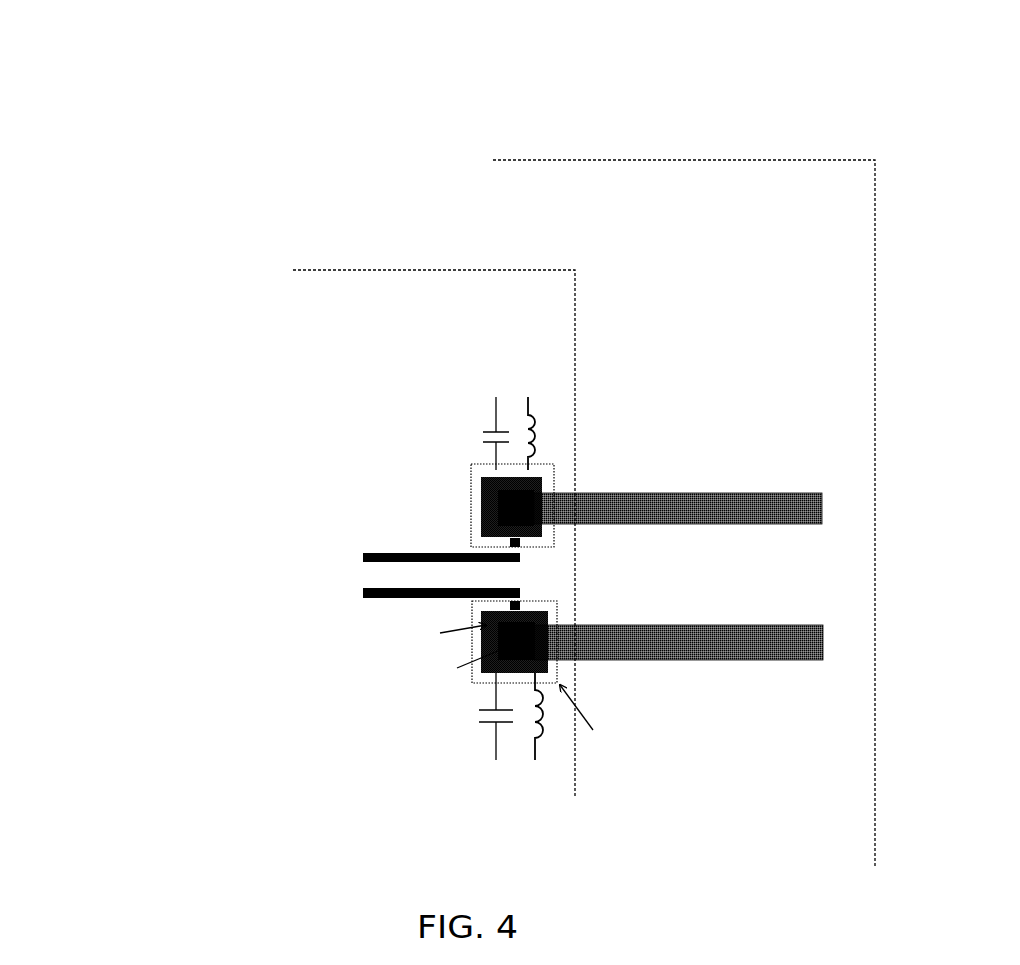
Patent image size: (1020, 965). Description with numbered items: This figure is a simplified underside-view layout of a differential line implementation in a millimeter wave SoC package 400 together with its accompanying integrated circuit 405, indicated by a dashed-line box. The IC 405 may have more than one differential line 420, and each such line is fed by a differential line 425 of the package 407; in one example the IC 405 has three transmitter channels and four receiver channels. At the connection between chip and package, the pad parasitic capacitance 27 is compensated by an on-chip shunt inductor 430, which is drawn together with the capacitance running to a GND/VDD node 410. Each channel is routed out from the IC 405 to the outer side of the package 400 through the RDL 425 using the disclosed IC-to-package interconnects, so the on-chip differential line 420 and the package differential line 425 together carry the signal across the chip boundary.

The millimeter wave SoC package 400 is at (102, 52).
The integrated circuit 405 is at (434, 534).
The package 407 is at (684, 513).
The GND/VDD node 410 is at (491, 577).
The differential line 420 is at (274, 575).
The differential line of the package 425 is at (737, 576).
The on-chip shunt inductor 430 is at (655, 578).
The pad parasitic capacitance 27 is at (339, 578).